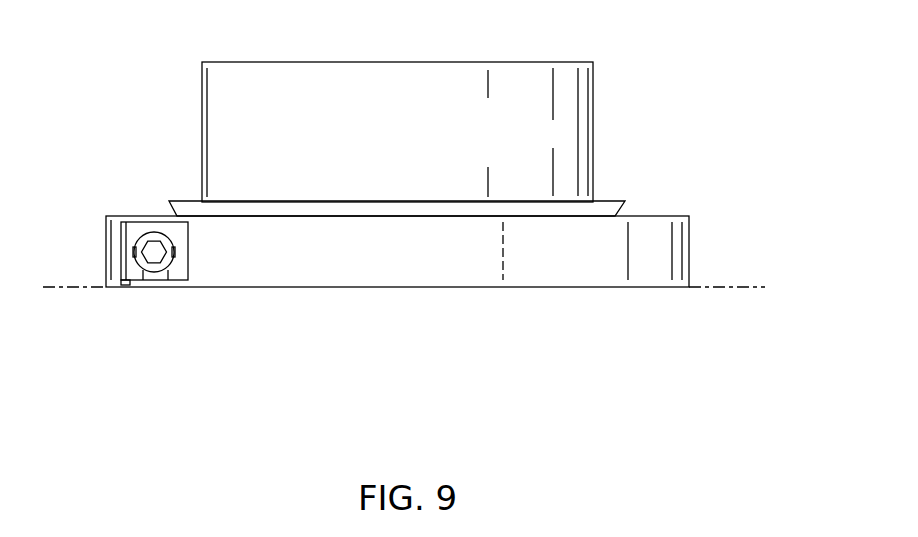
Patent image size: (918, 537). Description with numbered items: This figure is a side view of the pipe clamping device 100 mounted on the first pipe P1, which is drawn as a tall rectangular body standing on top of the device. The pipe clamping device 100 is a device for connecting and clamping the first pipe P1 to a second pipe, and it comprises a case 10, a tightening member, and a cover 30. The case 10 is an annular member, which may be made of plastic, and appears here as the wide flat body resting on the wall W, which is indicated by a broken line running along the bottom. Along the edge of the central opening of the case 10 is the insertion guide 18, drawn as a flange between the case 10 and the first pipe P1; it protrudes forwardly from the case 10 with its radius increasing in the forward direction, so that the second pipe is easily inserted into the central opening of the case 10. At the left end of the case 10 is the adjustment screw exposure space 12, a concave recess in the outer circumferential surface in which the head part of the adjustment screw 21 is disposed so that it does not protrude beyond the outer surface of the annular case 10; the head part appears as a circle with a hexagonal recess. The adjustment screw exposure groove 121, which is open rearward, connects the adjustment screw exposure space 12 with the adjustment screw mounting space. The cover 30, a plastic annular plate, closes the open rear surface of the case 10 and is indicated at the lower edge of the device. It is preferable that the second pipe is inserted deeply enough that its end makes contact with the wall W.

The pipe clamping device 100 is at (410, 204).
The case 10 is at (693, 227).
The insertion guide 18 is at (607, 207).
The adjustment screw exposure space 12 is at (114, 266).
The adjustment screw 21 is at (130, 243).
The adjustment screw exposure groove 121 is at (139, 253).
The cover 30 is at (140, 286).
The first pipe P1 is at (588, 87).
The wall W is at (732, 287).